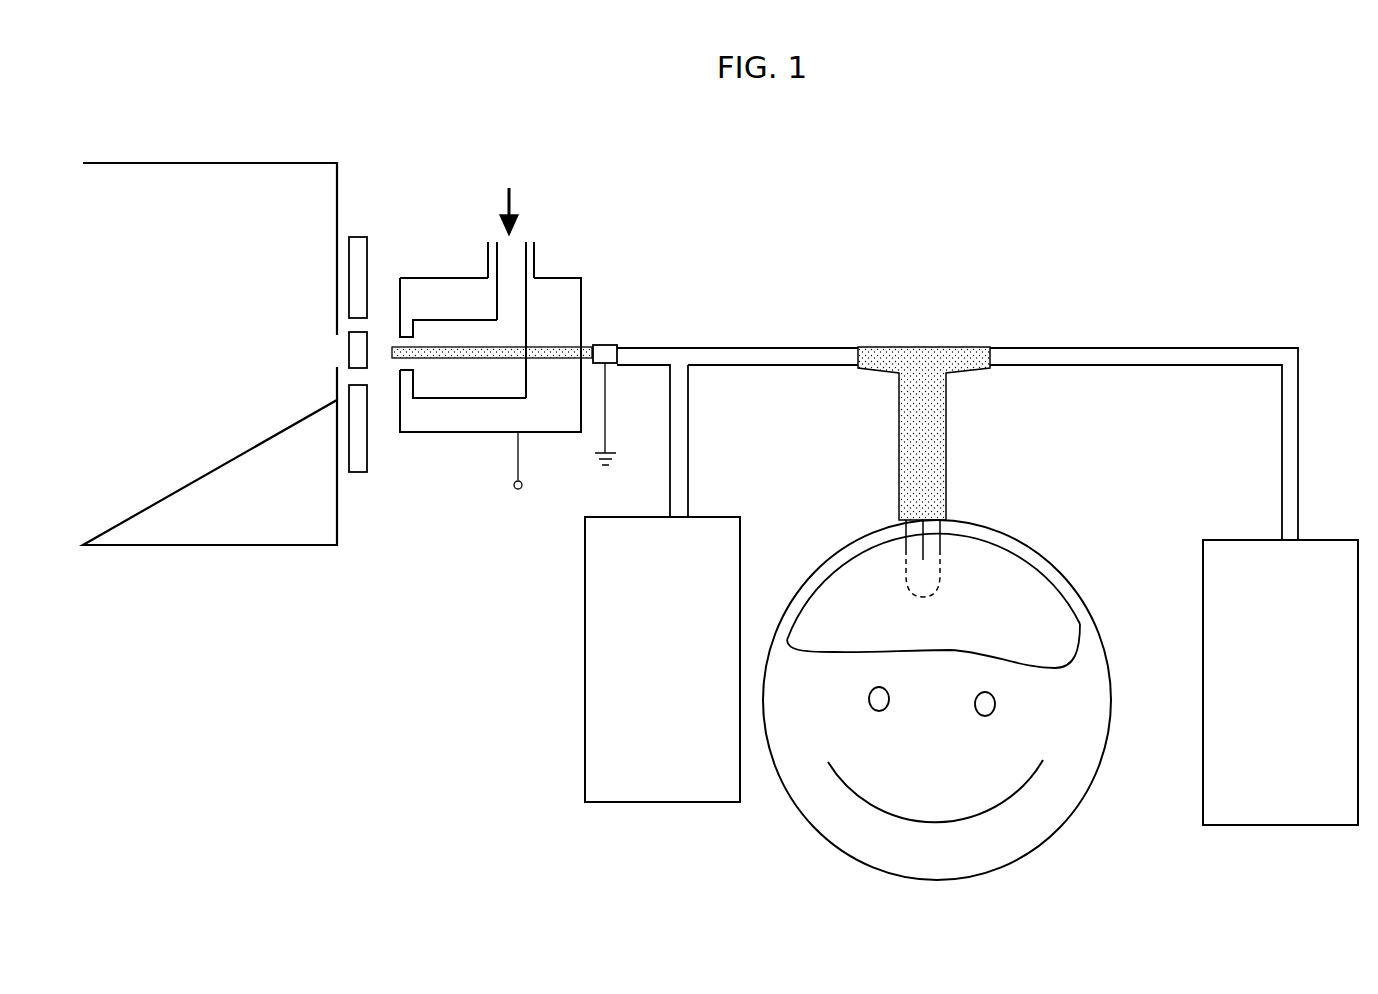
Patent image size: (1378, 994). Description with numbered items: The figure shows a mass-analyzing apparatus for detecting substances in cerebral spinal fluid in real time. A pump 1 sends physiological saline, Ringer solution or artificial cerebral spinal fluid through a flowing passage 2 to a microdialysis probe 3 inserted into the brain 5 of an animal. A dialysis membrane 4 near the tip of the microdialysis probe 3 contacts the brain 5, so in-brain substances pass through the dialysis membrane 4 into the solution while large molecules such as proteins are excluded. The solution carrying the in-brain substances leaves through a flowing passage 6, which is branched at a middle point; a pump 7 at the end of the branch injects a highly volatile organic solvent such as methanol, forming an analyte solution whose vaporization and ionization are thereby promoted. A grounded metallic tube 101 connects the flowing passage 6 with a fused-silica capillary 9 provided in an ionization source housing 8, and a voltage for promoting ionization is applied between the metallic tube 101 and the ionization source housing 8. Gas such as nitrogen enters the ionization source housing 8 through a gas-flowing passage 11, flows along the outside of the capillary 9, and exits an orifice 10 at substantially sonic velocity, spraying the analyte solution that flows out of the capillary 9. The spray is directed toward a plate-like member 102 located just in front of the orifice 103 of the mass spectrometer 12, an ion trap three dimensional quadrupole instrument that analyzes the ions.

The pump 1 is at (1250, 617).
The flowing passage 2 is at (1095, 362).
The microdialysis probe 3 is at (937, 348).
The dialysis membrane 4 is at (938, 578).
The brain 5 is at (1007, 603).
The flowing passage 6 is at (747, 353).
The pump 7 is at (707, 557).
The ionization source housing 8 is at (560, 318).
The capillary 9 is at (507, 355).
The orifice 10 is at (398, 340).
The gas-flowing passage 11 is at (508, 267).
The mass spectrometer 12 is at (260, 180).
The metallic tube 101 is at (602, 352).
The plate-like member 102 is at (358, 443).
The orifice 103 is at (333, 343).